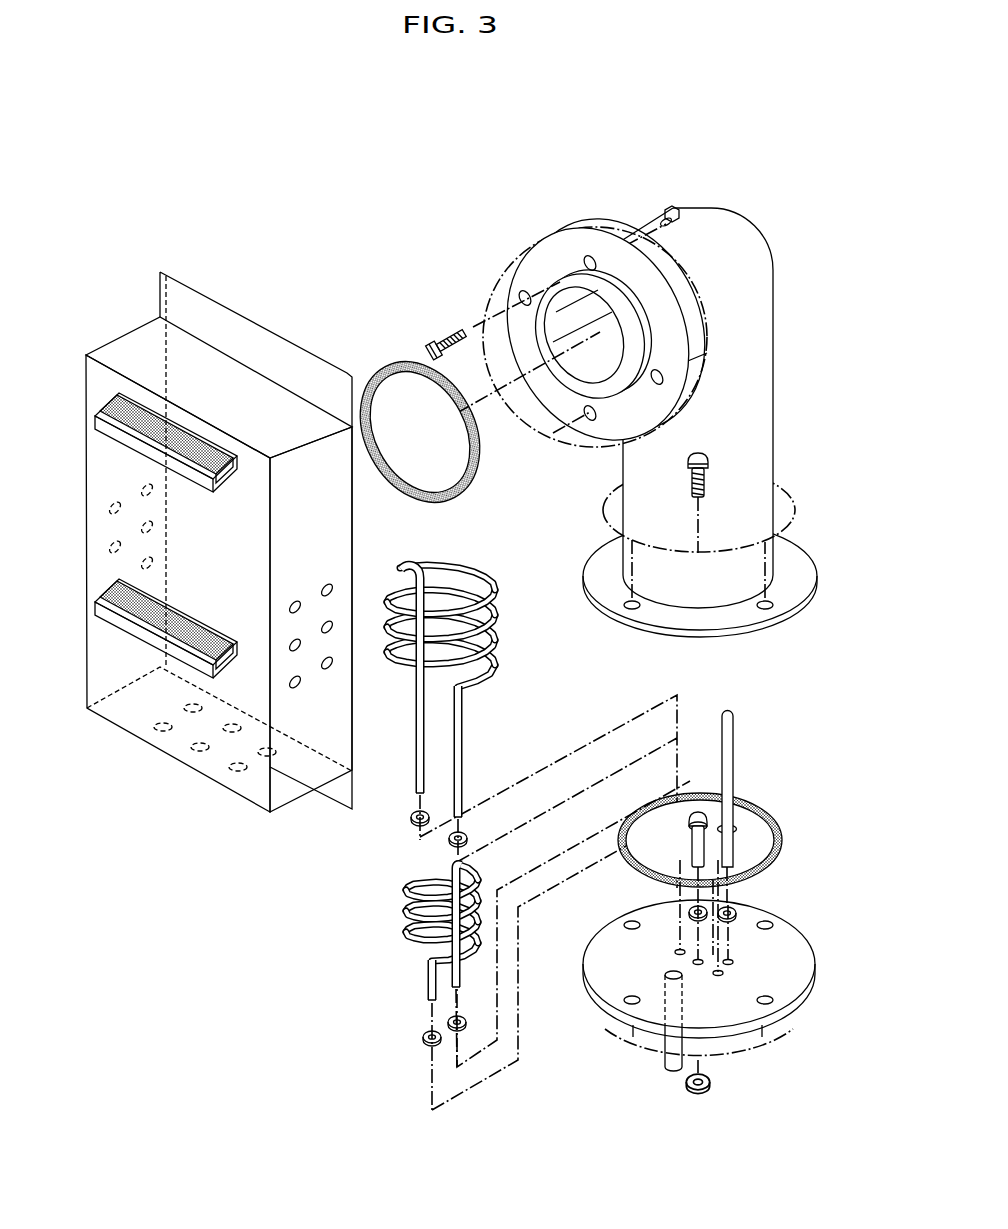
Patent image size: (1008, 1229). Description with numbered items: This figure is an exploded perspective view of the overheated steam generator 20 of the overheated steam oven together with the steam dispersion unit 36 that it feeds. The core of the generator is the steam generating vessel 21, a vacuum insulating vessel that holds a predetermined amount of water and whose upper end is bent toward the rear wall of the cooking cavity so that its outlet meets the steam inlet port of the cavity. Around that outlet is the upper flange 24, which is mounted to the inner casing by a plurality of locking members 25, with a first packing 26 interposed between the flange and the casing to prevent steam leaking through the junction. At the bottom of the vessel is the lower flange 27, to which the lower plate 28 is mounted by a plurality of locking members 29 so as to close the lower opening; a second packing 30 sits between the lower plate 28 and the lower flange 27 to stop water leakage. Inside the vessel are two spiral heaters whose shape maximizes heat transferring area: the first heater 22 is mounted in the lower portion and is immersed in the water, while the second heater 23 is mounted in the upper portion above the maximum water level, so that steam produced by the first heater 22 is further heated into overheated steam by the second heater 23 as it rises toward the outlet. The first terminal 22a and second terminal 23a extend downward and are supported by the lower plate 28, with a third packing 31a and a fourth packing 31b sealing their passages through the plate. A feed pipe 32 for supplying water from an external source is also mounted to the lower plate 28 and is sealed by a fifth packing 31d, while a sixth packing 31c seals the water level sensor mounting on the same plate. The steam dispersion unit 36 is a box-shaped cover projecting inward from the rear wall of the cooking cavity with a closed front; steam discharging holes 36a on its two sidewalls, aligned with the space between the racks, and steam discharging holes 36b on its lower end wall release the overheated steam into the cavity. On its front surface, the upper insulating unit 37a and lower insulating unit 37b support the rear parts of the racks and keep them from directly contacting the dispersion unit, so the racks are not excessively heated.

The overheated steam generator 20 is at (620, 682).
The steam generating vessel 21 is at (738, 202).
The first heater 22 is at (409, 903).
The first terminal 22a is at (430, 985).
The second heater 23 is at (496, 622).
The second terminal 23a is at (463, 760).
The upper flange 24 is at (540, 252).
The locking members 25 is at (445, 325).
The first packing 26 is at (381, 368).
The lower flange 27 is at (598, 555).
The lower plate 28 is at (787, 946).
The locking members 29 is at (698, 451).
The second packing 30 is at (756, 800).
The third packing 31a is at (426, 1037).
The fourth packing 31b is at (409, 819).
The sixth packing 31c is at (689, 921).
The fifth packing 31d is at (734, 906).
The feed pipe 32 is at (691, 848).
The steam dispersion unit 36 is at (117, 306).
The steam discharging holes 36a is at (153, 533).
The steam discharging holes 36b is at (238, 777).
The upper insulating unit 37a is at (195, 447).
The lower insulating unit 37b is at (194, 628).